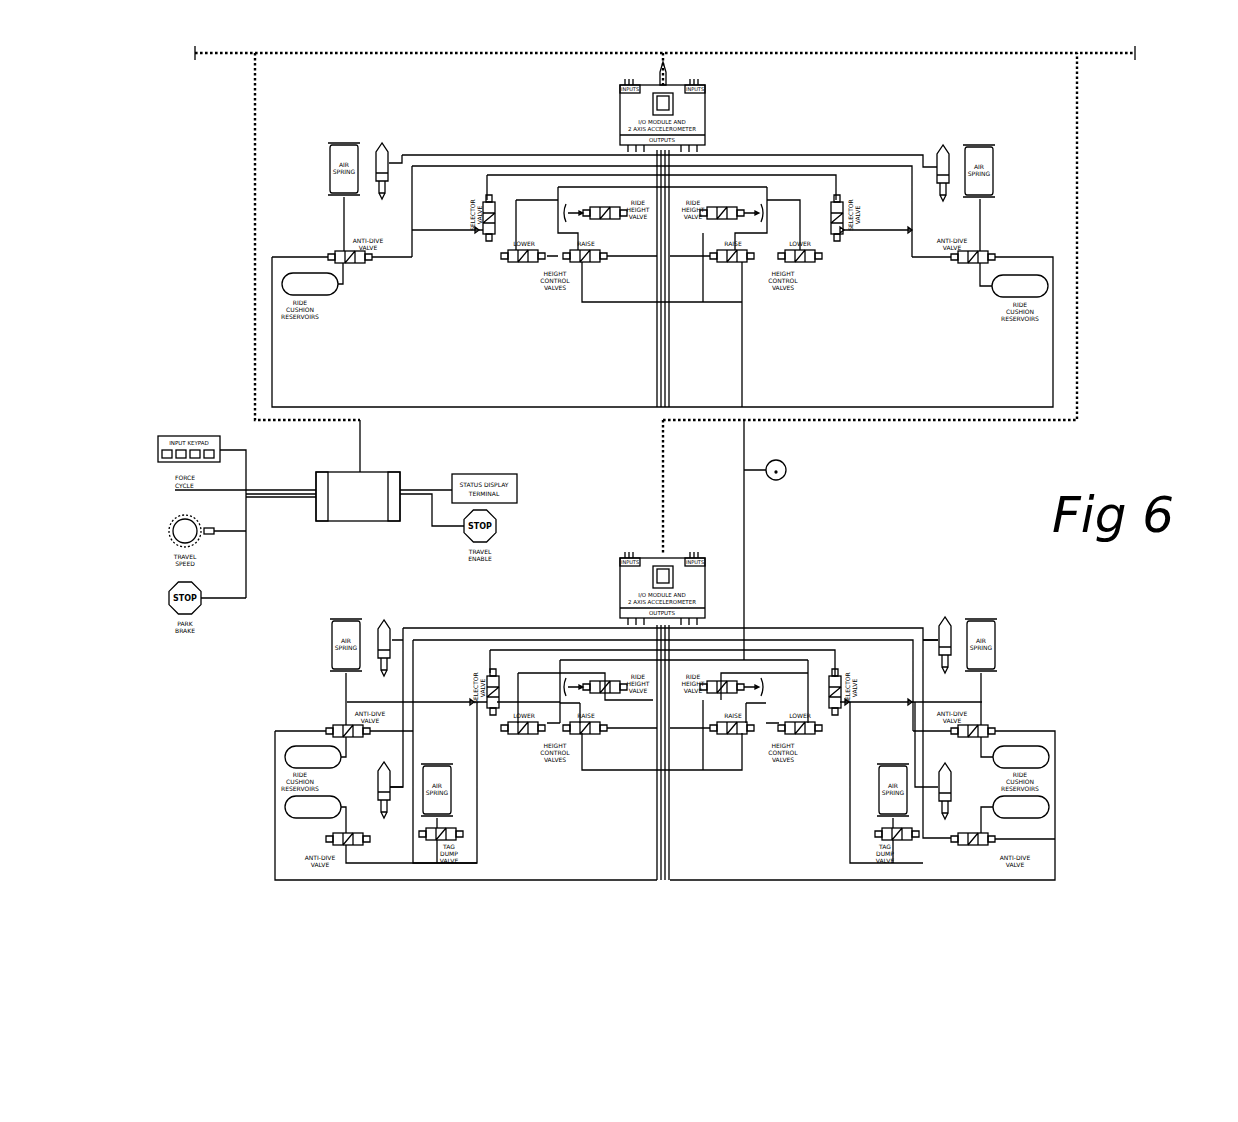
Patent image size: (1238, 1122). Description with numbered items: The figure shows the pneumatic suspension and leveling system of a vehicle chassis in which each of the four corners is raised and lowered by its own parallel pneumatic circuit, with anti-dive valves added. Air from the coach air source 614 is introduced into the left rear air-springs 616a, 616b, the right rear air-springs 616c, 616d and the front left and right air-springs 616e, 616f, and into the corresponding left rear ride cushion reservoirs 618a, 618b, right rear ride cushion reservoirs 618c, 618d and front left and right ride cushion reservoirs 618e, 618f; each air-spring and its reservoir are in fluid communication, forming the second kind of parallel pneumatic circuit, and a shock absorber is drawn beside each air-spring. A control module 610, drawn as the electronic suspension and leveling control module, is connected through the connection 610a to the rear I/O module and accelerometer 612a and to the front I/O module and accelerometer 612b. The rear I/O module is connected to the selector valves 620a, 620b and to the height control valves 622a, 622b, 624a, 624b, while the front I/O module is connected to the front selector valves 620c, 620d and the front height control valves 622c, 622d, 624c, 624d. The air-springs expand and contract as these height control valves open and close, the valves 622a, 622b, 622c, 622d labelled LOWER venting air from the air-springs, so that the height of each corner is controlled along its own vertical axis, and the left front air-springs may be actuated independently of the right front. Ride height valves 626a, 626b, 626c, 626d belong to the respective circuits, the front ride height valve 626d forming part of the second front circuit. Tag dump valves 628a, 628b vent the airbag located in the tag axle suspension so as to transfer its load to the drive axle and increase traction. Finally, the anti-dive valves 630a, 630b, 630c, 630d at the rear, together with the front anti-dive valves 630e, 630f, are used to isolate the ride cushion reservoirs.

The control module 610 is at (378, 478).
The communication line 610a is at (362, 440).
The rear I/O module and accelerometer 612a is at (635, 573).
The front I/O module and accelerometer 612b is at (632, 105).
The coach air source 614 is at (780, 478).
The left rear air-spring 616a is at (338, 630).
The left rear air-spring 616b is at (440, 800).
The right rear air-spring 616c is at (985, 625).
The right rear air-spring 616d is at (888, 800).
The front left air-spring 616e is at (338, 148).
The front right air-spring 616f is at (975, 150).
The left rear ride cushion reservoir 618a is at (312, 758).
The left rear ride cushion reservoir 618b is at (312, 807).
The right rear ride cushion reservoir 618c is at (1035, 757).
The right rear ride cushion reservoir 618d is at (1025, 808).
The front left ride cushion reservoir 618e is at (298, 283).
The front right ride cushion reservoir 618f is at (1030, 287).
The selector valve 620a is at (492, 676).
The selector valve 620b is at (838, 676).
The front selector valve 620c is at (836, 242).
The front selector valve 620d is at (490, 242).
The height control valve 622a is at (518, 735).
The height control valve 622b is at (835, 782).
The front height control valve 622c is at (800, 263).
The front height control valve 622d is at (525, 263).
The height control valve 624a is at (590, 735).
The height control valve 624b is at (730, 735).
The front height control valve 624c is at (735, 263).
The front height control valve 624d is at (590, 263).
The ride height valve 626a is at (607, 681).
The ride height valve 626b is at (737, 681).
The front ride height valve 626c is at (735, 205).
The front ride height valve 626d is at (607, 205).
The tag dump valve 628a is at (447, 840).
The tag dump valve 628b is at (872, 838).
The anti-dive valve 630a is at (350, 725).
The anti-dive valve 630b is at (350, 834).
The anti-dive valve 630c is at (978, 728).
The anti-dive valve 630d is at (965, 846).
The anti-dive valve 630e is at (345, 255).
The anti-dive valve 630f is at (978, 255).